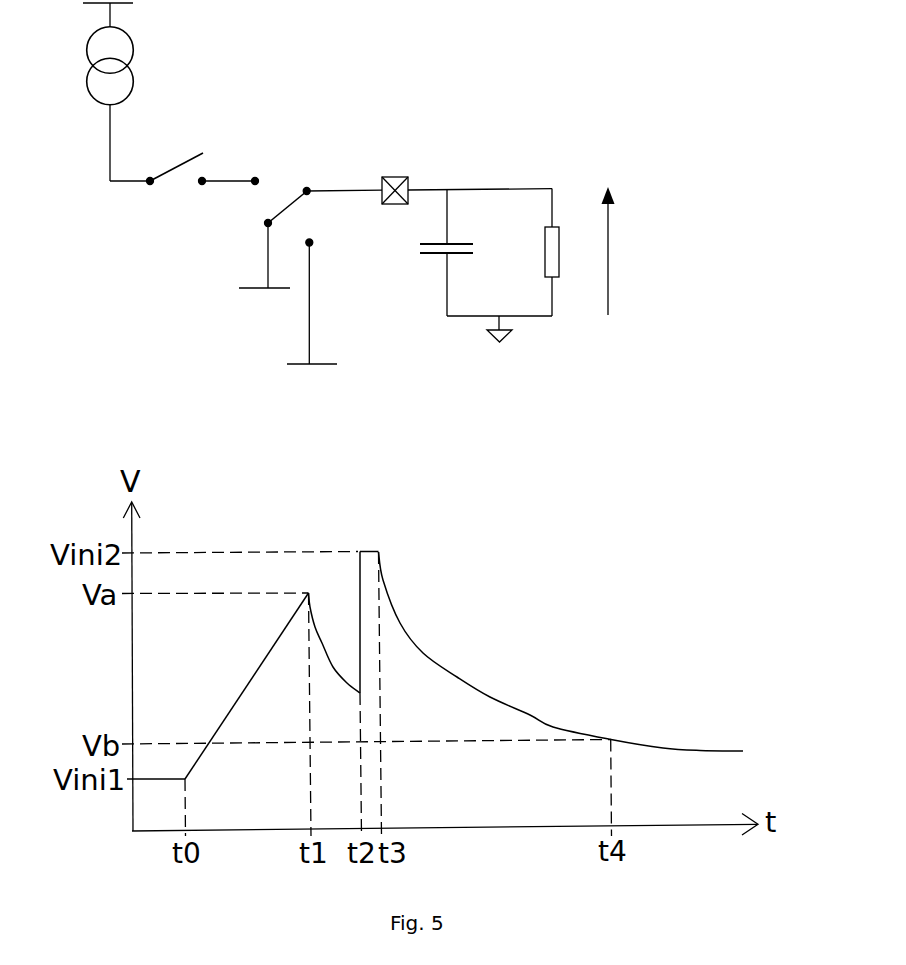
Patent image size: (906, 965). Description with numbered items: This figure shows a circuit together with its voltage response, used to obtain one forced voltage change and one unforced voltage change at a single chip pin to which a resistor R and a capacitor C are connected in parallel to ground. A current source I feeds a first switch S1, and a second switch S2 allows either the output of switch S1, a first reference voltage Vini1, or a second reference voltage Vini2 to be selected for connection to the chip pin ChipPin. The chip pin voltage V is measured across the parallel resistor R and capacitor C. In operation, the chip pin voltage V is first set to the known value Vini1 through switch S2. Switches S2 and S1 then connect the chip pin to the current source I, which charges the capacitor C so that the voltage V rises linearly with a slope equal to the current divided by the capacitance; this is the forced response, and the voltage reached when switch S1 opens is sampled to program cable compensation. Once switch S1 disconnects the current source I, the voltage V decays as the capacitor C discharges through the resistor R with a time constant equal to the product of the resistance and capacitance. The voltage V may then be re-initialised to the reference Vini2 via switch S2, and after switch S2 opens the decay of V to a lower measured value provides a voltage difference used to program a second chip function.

The current source I is at (76, 42).
The first switch S1 is at (203, 157).
The second switch S2 is at (289, 193).
The first reference voltage Vini1 is at (227, 265).
The second reference voltage Vini2 is at (275, 314).
The chip pin ChipPin is at (406, 165).
The capacitor C is at (432, 253).
The resistor R is at (538, 252).
The chip pin voltage V is at (622, 251).